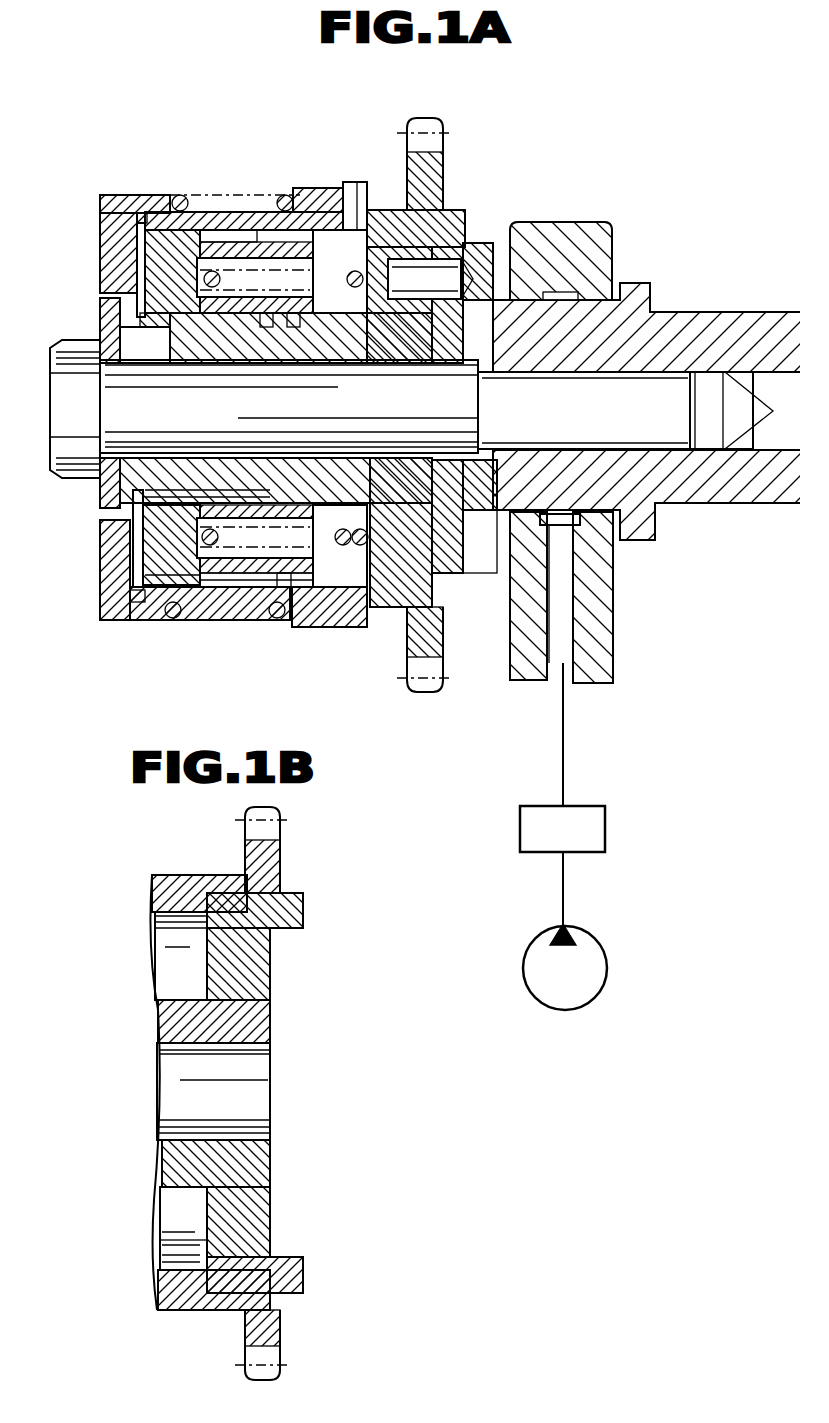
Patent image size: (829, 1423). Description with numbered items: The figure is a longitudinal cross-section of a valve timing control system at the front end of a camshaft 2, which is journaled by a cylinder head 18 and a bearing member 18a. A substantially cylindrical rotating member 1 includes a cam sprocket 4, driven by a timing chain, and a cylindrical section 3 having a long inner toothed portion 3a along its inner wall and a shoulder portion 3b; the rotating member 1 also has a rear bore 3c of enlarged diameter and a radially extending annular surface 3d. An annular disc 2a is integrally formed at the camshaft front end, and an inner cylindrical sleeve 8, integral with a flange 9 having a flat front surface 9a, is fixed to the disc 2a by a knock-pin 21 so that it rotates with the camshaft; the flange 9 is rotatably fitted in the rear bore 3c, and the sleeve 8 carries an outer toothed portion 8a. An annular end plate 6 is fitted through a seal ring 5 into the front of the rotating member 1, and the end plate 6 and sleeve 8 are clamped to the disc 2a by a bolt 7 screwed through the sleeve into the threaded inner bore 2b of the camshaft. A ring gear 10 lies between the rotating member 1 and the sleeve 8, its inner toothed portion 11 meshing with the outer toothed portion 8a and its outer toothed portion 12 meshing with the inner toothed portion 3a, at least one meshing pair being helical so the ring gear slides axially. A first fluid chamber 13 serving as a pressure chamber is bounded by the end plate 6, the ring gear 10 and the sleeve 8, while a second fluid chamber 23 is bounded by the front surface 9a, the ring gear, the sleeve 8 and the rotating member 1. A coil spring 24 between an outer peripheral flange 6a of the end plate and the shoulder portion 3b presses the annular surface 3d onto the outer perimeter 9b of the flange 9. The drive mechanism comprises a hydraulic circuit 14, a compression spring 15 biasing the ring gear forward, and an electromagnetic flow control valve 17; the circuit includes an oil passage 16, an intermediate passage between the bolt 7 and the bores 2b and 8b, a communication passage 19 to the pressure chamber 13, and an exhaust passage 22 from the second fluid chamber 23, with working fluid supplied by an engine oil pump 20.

In FIG. 1A, the rotating member 1 is at (322, 176).
In FIG. 1B, the rotating member 1 is at (145, 868).
In FIG. 1A, the camshaft 2 is at (686, 310).
In FIG. 1A, the annular disc 2a is at (528, 222).
In FIG. 1A, the inner bore 2b is at (482, 470).
In FIG. 1A, the cylindrical section 3 is at (248, 211).
In FIG. 1B, the cylindrical section 3 is at (172, 878).
In FIG. 1A, the inner toothed portion 3a is at (222, 230).
In FIG. 1A, the shoulder portion 3b is at (298, 190).
In FIG. 1A, the rear bore 3c is at (400, 215).
In FIG. 1B, the rear bore 3c is at (302, 912).
In FIG. 1A, the annular surface 3d is at (388, 216).
In FIG. 1B, the annular surface 3d is at (213, 897).
In FIG. 1A, the cam sprocket 4 is at (440, 125).
In FIG. 1B, the cam sprocket 4 is at (280, 830).
In FIG. 1A, the seal ring 5 is at (135, 219).
In FIG. 1A, the annular end plate 6 is at (110, 195).
In FIG. 1A, the outer peripheral flange 6a is at (160, 195).
In FIG. 1A, the bolt 7 is at (62, 392).
In FIG. 1A, the inner cylindrical sleeve 8 is at (193, 482).
In FIG. 1B, the inner cylindrical sleeve 8 is at (183, 1194).
In FIG. 1A, the outer toothed portion 8a is at (250, 560).
In FIG. 1A, the inner bore 8b is at (400, 580).
In FIG. 1B, the inner bore 8b is at (252, 1140).
In FIG. 1A, the flange 9 is at (397, 255).
In FIG. 1B, the flange 9 is at (265, 985).
In FIG. 1A, the front surface 9a is at (426, 240).
In FIG. 1B, the front surface 9a is at (245, 1003).
In FIG. 1A, the outer perimeter 9b is at (348, 232).
In FIG. 1B, the outer perimeter 9b is at (180, 916).
In FIG. 1A, the ring gear 10 is at (185, 612).
In FIG. 1A, the inner toothed portion 11 is at (105, 495).
In FIG. 1A, the outer toothed portion 12 is at (158, 606).
In FIG. 1A, the first fluid chamber 13 is at (137, 275).
In FIG. 1A, the hydraulic circuit 14 is at (572, 710).
In FIG. 1A, the compression spring 15 is at (338, 548).
In FIG. 1A, the oil passage 16 is at (565, 572).
In FIG. 1A, the electromagnetic flow control valve 17 is at (605, 822).
In FIG. 1A, the cylinder head 18 is at (613, 632).
In FIG. 1A, the bearing member 18a is at (590, 221).
In FIG. 1A, the communication passage 19 is at (150, 345).
In FIG. 1A, the engine oil pump 20 is at (602, 955).
In FIG. 1A, the knock-pin 21 is at (418, 300).
In FIG. 1A, the exhaust passage 22 is at (358, 548).
In FIG. 1A, the second fluid chamber 23 is at (312, 592).
In FIG. 1B, the second fluid chamber 23 is at (188, 1250).
In FIG. 1A, the coil spring 24 is at (178, 195).